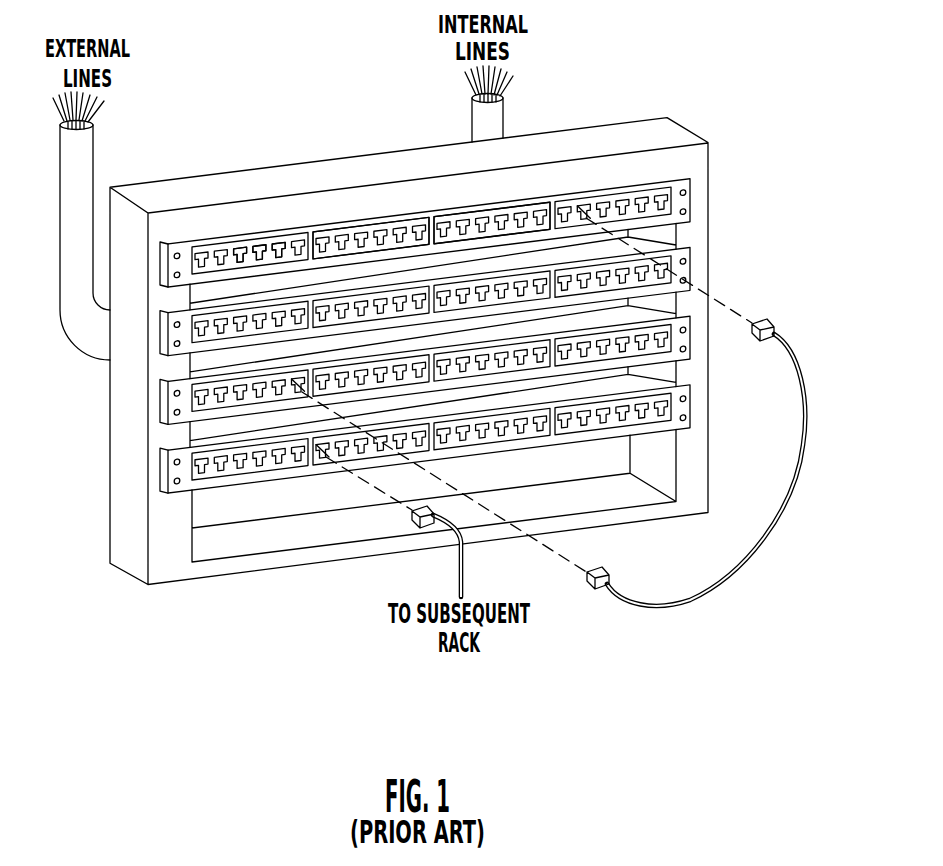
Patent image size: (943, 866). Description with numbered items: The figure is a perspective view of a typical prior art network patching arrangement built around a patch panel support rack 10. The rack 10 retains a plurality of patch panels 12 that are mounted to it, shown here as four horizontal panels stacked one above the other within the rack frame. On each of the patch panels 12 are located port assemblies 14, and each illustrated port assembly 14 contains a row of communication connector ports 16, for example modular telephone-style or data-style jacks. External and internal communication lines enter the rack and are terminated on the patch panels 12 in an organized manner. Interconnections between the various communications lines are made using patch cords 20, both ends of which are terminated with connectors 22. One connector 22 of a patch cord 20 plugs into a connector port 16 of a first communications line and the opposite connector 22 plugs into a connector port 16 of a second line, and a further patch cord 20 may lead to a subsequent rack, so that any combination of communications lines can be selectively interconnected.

The patch panel support rack 10 is at (595, 138).
The patch panel 12 is at (684, 270).
The port assembly 14 is at (447, 216).
The communication connector port 16 is at (280, 243).
The patch cord 20 is at (791, 491).
The connector 22 is at (771, 320).